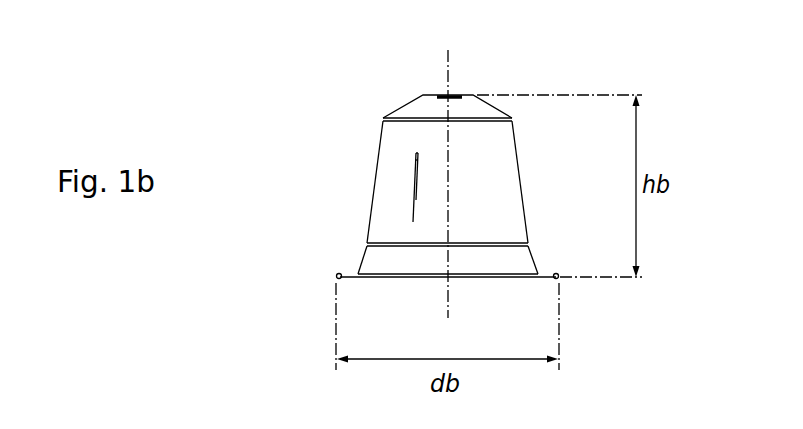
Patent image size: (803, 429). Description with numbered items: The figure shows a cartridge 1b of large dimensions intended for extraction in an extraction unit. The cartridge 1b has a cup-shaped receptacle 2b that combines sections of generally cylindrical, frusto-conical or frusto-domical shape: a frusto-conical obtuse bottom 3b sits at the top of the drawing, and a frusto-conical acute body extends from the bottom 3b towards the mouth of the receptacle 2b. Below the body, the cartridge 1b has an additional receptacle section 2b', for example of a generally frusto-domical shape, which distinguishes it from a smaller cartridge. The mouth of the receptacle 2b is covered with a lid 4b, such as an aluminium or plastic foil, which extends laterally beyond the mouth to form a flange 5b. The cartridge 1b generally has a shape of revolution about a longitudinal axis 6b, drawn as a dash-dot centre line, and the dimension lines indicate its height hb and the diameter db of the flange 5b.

The cartridge 1b is at (311, 111).
The cup-shaped receptacle 2b is at (406, 170).
The additional receptacle section 2b' is at (475, 237).
The frusto-conical obtuse bottom 3b is at (440, 95).
The lid 4b is at (418, 278).
The flange 5b is at (338, 275).
The longitudinal axis 6b is at (450, 73).